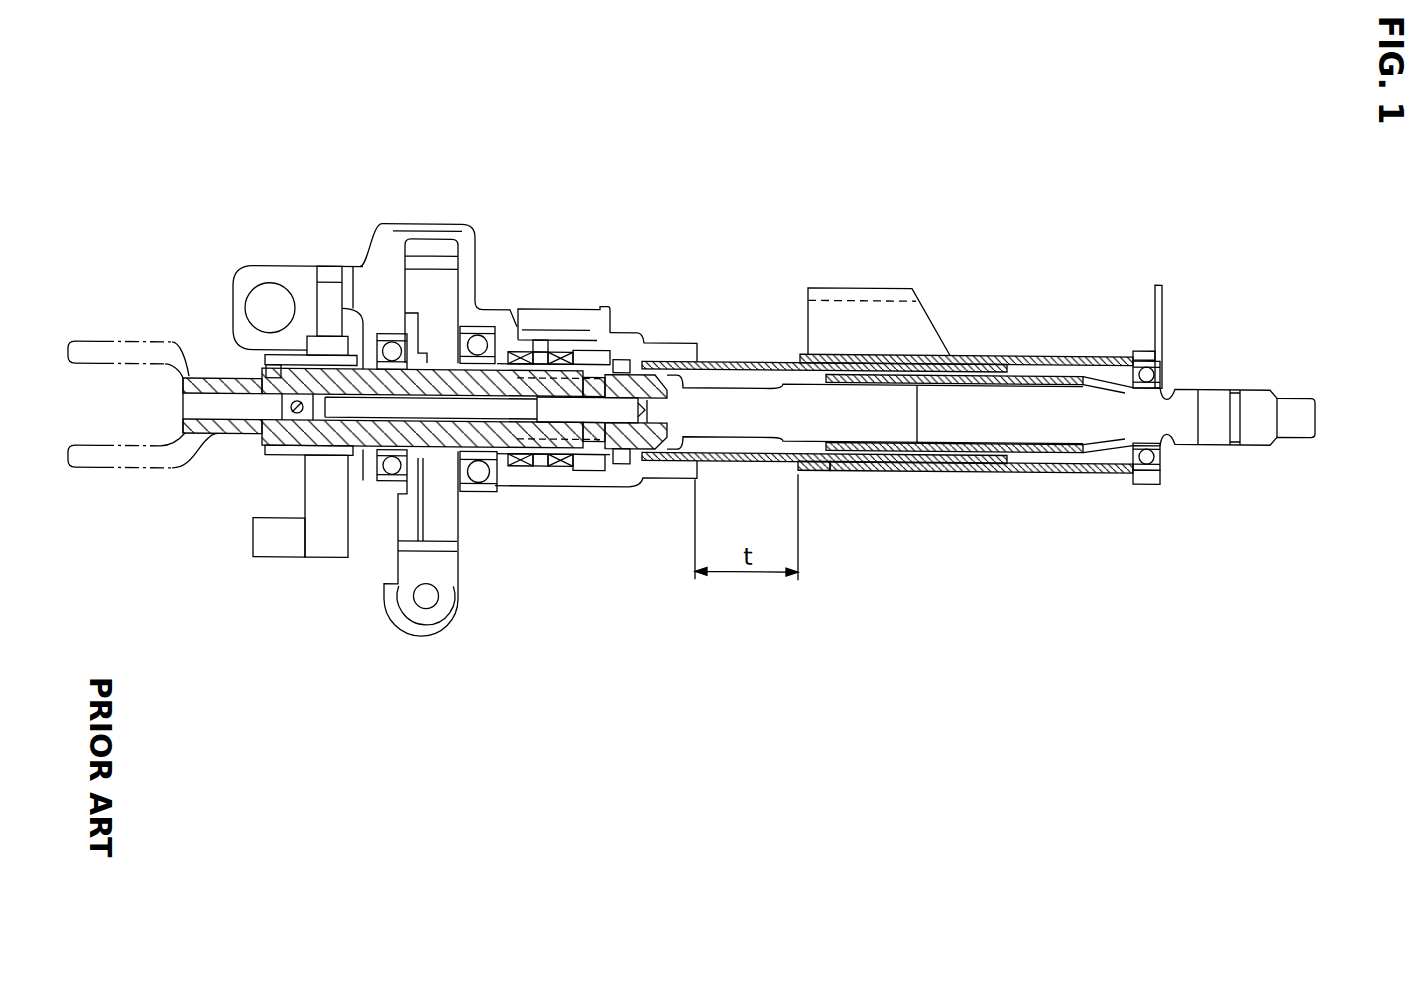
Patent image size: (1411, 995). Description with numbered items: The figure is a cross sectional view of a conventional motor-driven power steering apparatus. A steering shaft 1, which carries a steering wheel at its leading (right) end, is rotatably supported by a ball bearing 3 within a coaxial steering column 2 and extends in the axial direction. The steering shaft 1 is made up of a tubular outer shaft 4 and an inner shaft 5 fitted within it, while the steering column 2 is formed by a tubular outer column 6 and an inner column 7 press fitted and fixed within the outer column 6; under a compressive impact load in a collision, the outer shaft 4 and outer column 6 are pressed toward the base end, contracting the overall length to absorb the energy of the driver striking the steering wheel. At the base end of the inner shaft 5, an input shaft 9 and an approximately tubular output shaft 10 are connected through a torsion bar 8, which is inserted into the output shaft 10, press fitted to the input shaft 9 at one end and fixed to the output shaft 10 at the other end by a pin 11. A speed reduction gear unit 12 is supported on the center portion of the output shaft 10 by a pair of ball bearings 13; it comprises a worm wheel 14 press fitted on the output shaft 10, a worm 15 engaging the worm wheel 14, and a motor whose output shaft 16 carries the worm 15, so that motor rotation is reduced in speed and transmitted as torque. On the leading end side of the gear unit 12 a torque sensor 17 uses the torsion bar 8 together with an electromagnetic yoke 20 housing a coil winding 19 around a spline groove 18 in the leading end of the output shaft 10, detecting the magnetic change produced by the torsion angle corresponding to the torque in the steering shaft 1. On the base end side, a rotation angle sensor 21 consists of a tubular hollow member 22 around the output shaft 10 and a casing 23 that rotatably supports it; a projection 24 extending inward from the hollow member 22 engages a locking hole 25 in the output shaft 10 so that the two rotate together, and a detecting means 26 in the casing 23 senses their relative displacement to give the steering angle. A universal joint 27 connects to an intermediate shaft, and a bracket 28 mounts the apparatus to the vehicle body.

The steering shaft 1 is at (1273, 370).
The steering column 2 is at (1051, 341).
The ball bearing 3 is at (1158, 472).
The outer shaft 4 is at (1050, 444).
The inner shaft 5 is at (803, 438).
The outer column 6 is at (968, 465).
The inner column 7 is at (745, 357).
The torsion bar 8 is at (662, 335).
The input shaft 9 is at (634, 422).
The output shaft 10 is at (270, 437).
The pin 11 is at (292, 408).
The speed reduction gear unit 12 is at (480, 257).
The ball bearing 13 is at (392, 480).
The worm wheel 14 is at (442, 243).
The worm 15 is at (440, 609).
The output shaft 16 is at (422, 597).
The torque sensor 17 is at (490, 406).
The spline groove 18 is at (557, 436).
The coil winding 19 is at (556, 466).
The electromagnetic yoke 20 is at (510, 333).
The rotation angle sensor 21 is at (265, 542).
The hollow member 22 is at (290, 453).
The casing 23 is at (320, 546).
The projection 24 is at (270, 372).
The locking hole 25 is at (272, 366).
The detecting means 26 is at (270, 540).
The universal joint 27 is at (130, 468).
The bracket 28 is at (862, 322).